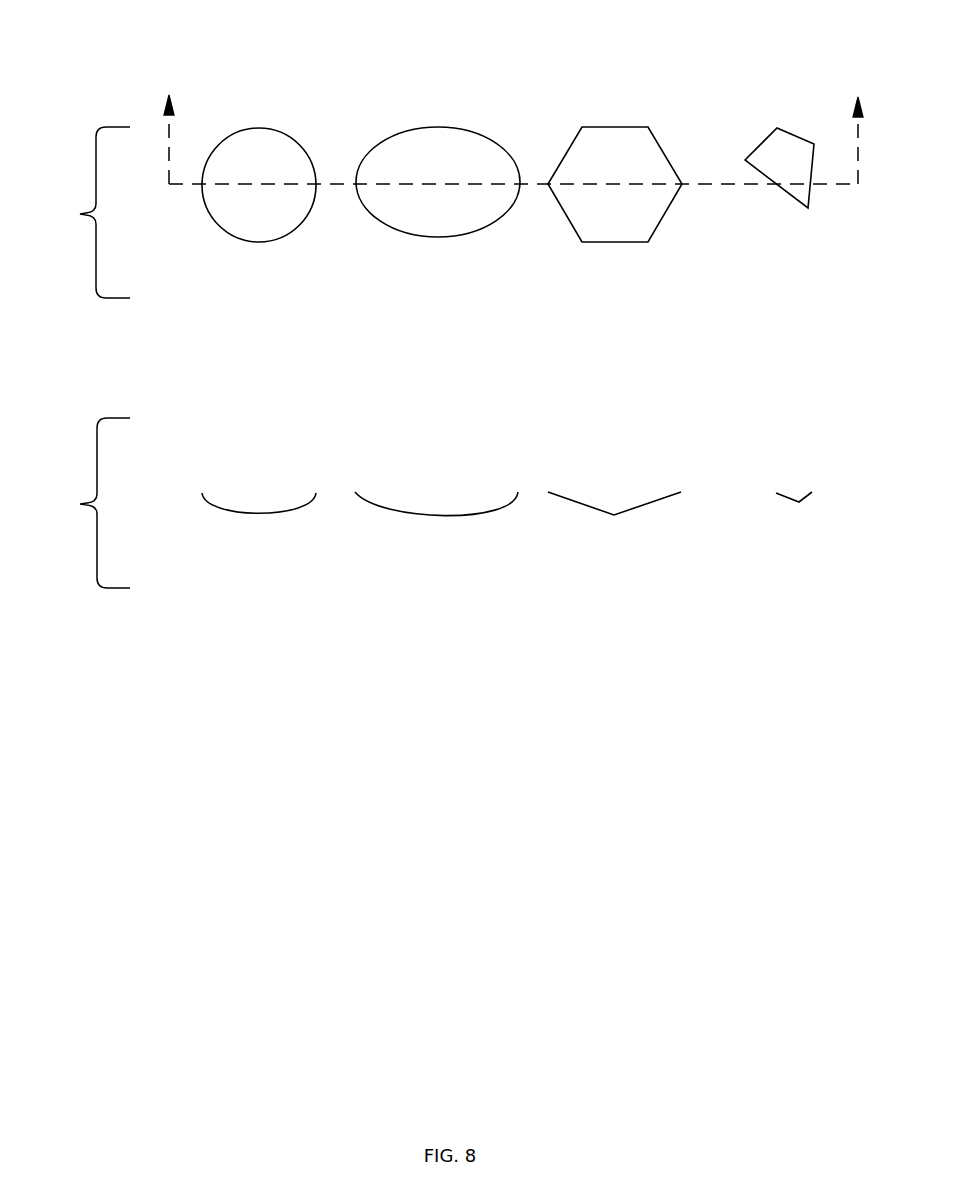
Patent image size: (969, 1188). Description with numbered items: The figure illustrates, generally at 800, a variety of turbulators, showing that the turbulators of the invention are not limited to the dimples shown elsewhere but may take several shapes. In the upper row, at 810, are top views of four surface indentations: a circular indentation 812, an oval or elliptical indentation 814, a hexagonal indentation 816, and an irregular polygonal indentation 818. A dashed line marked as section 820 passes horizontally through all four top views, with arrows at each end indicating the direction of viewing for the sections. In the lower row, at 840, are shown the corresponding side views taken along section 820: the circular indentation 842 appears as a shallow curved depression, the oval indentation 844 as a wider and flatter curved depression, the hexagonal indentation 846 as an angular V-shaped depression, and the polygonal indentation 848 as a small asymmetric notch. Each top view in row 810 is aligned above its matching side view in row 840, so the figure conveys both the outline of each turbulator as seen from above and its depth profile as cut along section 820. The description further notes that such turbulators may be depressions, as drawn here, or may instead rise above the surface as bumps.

The variety of turbulators 800 is at (713, 41).
The top views 810 is at (77, 212).
The circular surface indentation 812 is at (259, 203).
The oval (ellipse) surface indentation 814 is at (438, 201).
The hexagonal surface indentation 816 is at (615, 201).
The polygonal surface indentation 818 is at (779, 199).
The section 820 is at (514, 122).
The side views 840 is at (77, 503).
The circular surface indentation side view 842 is at (259, 540).
The oval surface indentation side view 844 is at (436, 538).
The hexagonal surface indentation side view 846 is at (614, 538).
The polygonal surface indentation side view 848 is at (790, 535).